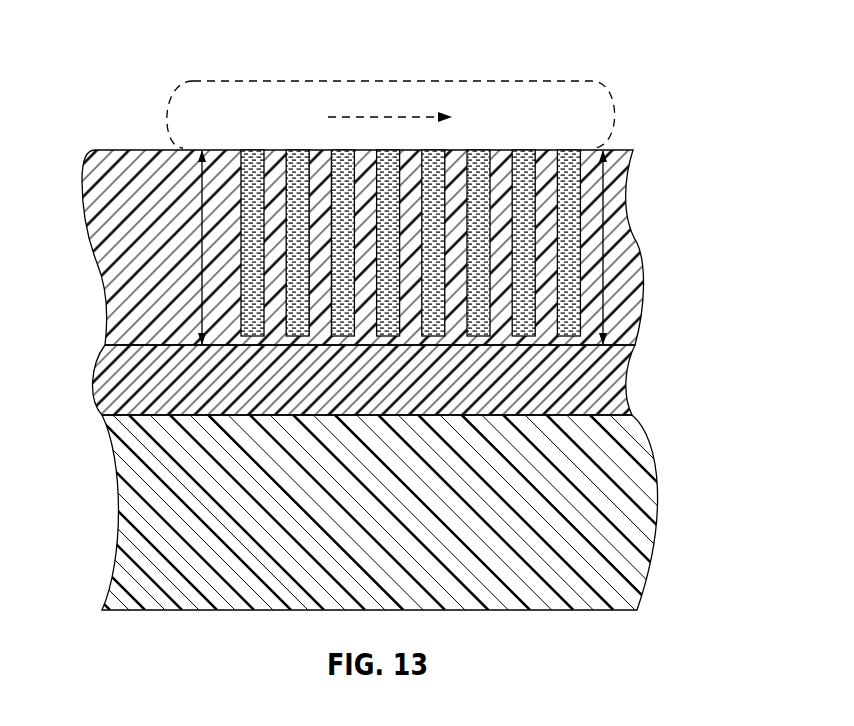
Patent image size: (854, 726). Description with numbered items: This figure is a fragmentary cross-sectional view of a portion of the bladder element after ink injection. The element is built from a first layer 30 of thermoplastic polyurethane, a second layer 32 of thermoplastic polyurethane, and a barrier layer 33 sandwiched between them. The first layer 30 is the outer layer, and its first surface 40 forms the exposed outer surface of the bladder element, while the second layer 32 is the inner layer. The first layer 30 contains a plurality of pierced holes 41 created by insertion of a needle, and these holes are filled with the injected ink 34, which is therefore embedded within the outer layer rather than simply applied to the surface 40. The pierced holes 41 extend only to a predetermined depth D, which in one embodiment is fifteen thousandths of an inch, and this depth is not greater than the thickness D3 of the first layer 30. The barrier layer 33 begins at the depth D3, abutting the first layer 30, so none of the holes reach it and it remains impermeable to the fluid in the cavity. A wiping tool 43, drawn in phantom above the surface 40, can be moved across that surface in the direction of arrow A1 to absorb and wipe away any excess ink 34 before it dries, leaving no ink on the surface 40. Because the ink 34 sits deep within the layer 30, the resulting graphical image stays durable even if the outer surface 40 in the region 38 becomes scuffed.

The first layer 30 is at (632, 302).
The second layer 32 is at (639, 505).
The barrier layer 33 is at (608, 387).
The ink 34 is at (568, 149).
The region 38 is at (272, 250).
The first surface 40 is at (320, 150).
The pierced holes 41 is at (243, 181).
The wiping tool 43 is at (537, 80).
The arrow A1 is at (395, 116).
The predetermined depth D is at (202, 238).
The thickness of the first layer D3 is at (631, 238).